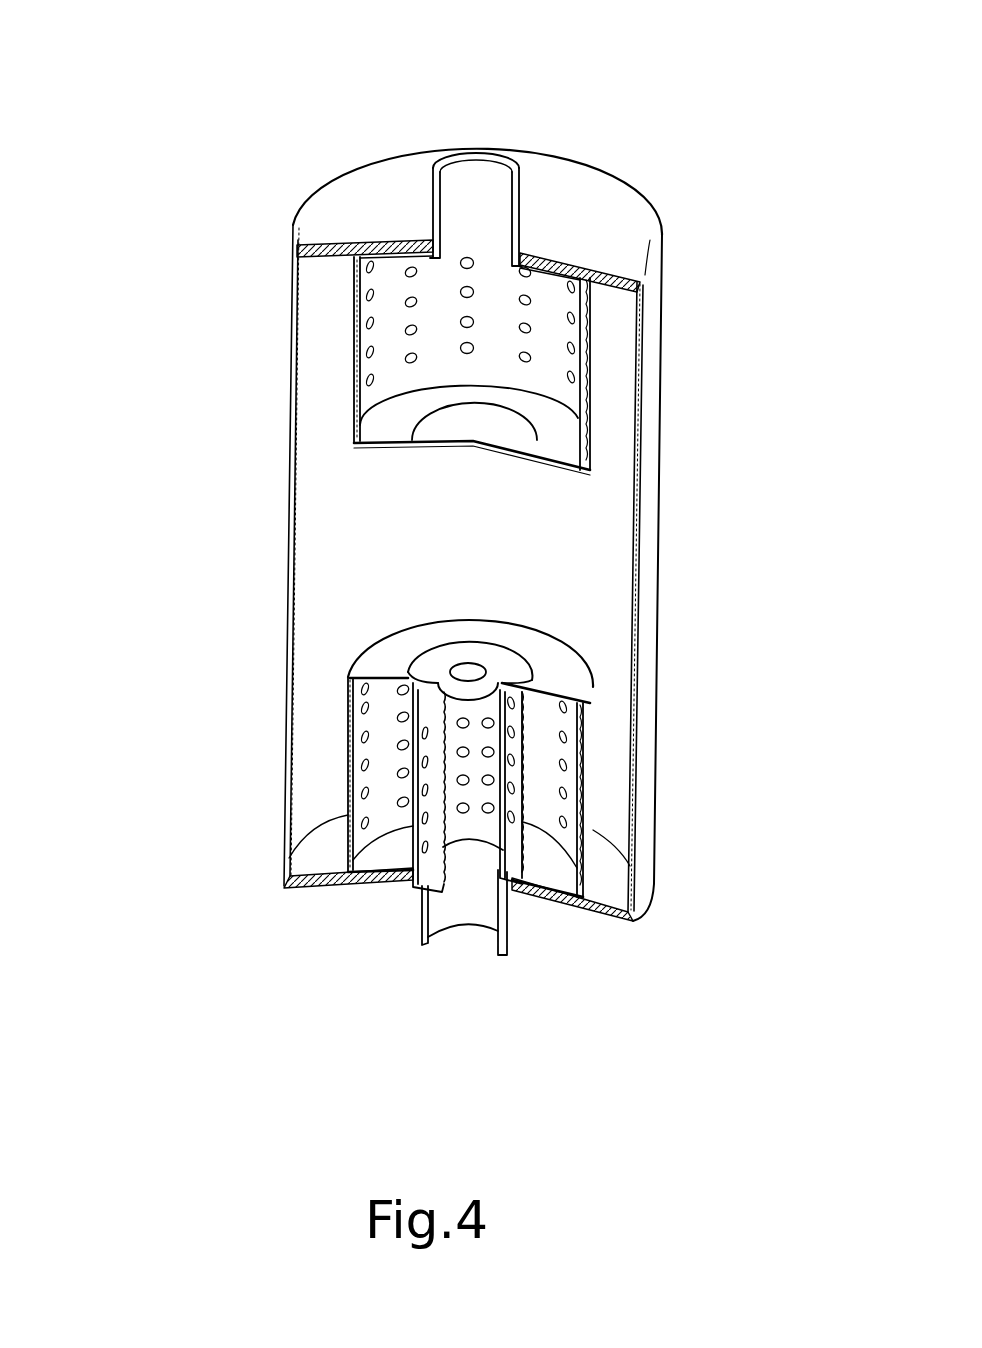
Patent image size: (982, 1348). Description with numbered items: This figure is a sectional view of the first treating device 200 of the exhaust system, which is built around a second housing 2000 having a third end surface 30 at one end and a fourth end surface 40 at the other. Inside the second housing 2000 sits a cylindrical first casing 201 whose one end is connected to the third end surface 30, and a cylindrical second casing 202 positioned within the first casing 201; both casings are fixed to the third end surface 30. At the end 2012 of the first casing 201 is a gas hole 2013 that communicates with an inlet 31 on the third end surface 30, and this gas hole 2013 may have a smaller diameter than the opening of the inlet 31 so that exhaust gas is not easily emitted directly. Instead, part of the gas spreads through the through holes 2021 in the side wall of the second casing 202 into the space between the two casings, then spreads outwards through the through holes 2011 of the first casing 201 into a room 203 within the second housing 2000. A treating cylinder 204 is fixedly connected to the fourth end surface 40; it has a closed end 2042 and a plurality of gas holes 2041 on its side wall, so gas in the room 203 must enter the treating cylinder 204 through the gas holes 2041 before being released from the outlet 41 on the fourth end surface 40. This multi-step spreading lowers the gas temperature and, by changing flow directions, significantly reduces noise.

The third end surface 30 is at (568, 958).
The inlet 31 is at (286, 935).
The fourth end surface 40 is at (359, 147).
The outlet 41 is at (649, 138).
The first treating device 200 is at (575, 535).
The second housing 2000 is at (742, 597).
The first casing 201 is at (605, 735).
The through holes 2011 is at (319, 694).
The end of the first casing 2012 is at (331, 576).
The gas hole 2013 is at (280, 511).
The second casing 202 is at (295, 780).
The through holes 2021 is at (641, 659).
The room 203 is at (702, 453).
The treating cylinder 204 is at (610, 298).
The gas holes 2041 is at (327, 251).
The closed end 2042 is at (307, 332).